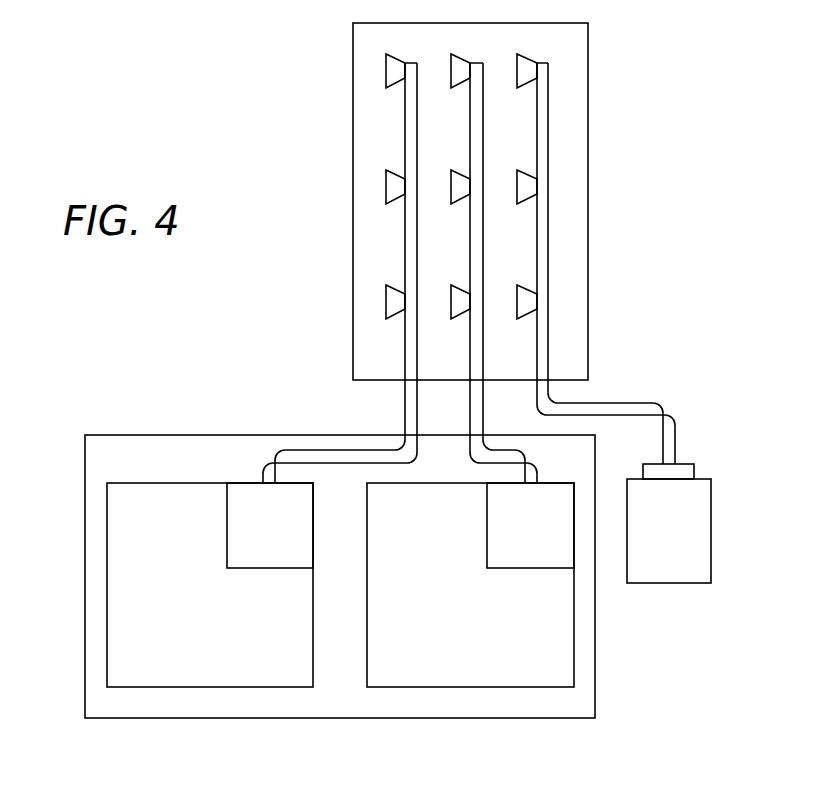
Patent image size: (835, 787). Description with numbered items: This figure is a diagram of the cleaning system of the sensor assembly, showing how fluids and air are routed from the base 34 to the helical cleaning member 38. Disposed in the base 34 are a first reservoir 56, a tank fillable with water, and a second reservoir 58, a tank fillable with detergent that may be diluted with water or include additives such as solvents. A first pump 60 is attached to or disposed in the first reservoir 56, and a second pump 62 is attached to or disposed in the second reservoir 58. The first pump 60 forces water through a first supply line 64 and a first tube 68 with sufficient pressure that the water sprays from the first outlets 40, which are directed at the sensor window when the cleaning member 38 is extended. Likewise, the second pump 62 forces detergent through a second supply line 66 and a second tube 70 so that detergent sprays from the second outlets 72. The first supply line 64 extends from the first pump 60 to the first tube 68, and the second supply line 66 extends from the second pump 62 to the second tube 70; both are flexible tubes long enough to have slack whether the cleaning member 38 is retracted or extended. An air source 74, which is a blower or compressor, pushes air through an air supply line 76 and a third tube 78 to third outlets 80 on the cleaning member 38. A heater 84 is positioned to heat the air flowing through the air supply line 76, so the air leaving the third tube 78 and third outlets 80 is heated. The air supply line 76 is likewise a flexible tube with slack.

The base 34 is at (85, 473).
The helical cleaning member 38 is at (590, 52).
The first outlets 40 is at (384, 70).
The first reservoir 56 is at (140, 688).
The second reservoir 58 is at (397, 688).
The first pump 60 is at (240, 590).
The second pump 62 is at (513, 570).
The first supply line 64 is at (308, 450).
The second supply line 66 is at (477, 455).
The first tube 68 is at (404, 367).
The second tube 70 is at (470, 360).
The second outlets 72 is at (451, 75).
The air source 74 is at (711, 500).
The air supply line 76 is at (638, 405).
The third tube 78 is at (551, 343).
The third outlets 80 is at (517, 75).
The heater 84 is at (683, 464).